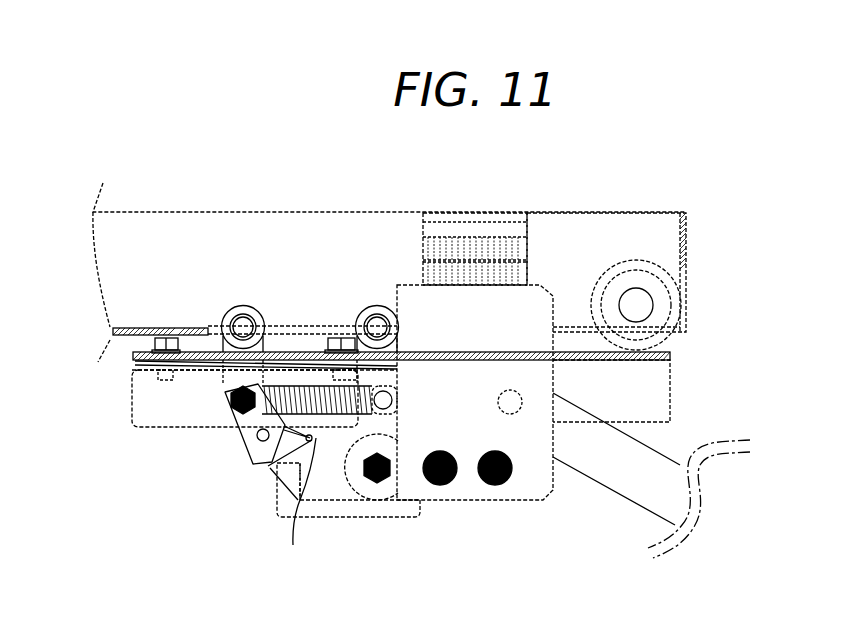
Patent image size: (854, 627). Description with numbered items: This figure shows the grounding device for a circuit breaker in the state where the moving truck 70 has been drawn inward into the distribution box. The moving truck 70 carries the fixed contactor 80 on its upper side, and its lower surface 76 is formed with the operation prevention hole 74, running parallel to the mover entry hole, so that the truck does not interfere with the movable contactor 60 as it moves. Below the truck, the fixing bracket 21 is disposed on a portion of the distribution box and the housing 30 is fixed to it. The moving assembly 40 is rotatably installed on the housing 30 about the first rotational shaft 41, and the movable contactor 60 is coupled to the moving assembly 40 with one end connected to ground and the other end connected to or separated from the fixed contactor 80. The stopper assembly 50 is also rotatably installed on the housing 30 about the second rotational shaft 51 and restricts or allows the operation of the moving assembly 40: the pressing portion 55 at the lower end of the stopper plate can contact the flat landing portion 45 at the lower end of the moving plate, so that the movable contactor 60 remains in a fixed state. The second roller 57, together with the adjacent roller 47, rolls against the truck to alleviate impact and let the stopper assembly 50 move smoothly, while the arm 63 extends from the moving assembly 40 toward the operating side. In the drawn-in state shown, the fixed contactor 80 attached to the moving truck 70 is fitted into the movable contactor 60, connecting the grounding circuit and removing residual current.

The fixing bracket 21 is at (660, 387).
The housing 30 is at (145, 408).
The moving assembly 40 is at (342, 510).
The first rotational shaft 41 is at (385, 482).
The landing portion 45 is at (303, 488).
The roller 47 is at (377, 305).
The stopper assembly 50 is at (240, 458).
The second rotational shaft 51 is at (232, 403).
The pressing portion 55 is at (265, 468).
The second roller 57 is at (243, 305).
The movable contactor 60 is at (518, 492).
The connecting arm 63 is at (618, 487).
The moving truck 70 is at (612, 213).
The operation prevention hole 74 is at (305, 332).
The lower surface 76 is at (124, 338).
The fixed contactor 80 is at (482, 228).